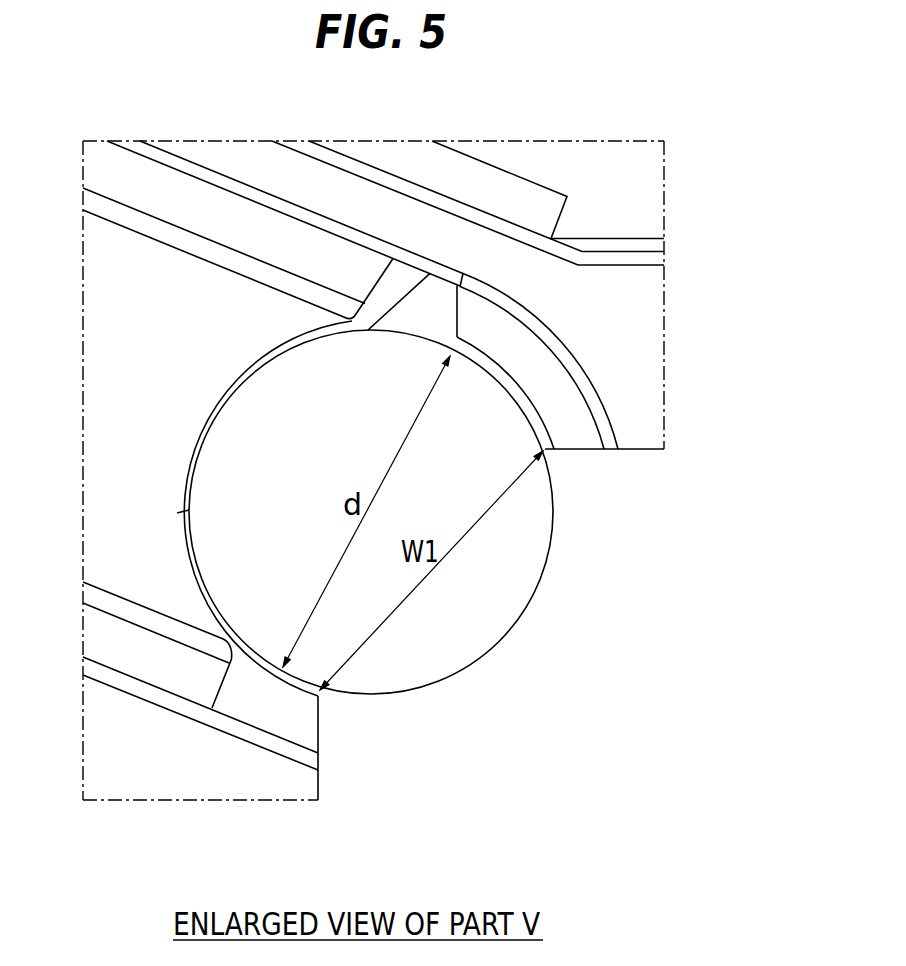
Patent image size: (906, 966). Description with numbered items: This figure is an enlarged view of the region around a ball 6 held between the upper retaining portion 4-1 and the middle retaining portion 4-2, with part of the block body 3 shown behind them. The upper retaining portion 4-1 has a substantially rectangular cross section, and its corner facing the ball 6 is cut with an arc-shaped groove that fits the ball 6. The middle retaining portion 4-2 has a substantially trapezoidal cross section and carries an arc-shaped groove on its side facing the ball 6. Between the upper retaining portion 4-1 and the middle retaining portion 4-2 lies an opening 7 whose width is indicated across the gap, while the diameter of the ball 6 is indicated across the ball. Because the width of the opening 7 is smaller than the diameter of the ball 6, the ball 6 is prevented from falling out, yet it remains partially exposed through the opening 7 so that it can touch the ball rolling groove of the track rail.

The block body 3 is at (593, 160).
The upper retaining portion 4-1 is at (632, 382).
The middle retaining portion 4-2 is at (245, 773).
The ball 6 is at (422, 663).
The opening 7 is at (452, 552).